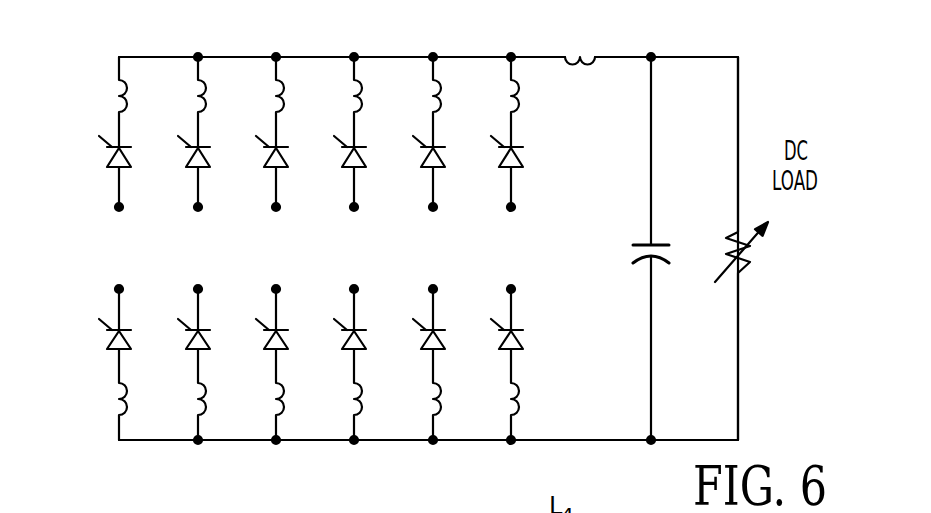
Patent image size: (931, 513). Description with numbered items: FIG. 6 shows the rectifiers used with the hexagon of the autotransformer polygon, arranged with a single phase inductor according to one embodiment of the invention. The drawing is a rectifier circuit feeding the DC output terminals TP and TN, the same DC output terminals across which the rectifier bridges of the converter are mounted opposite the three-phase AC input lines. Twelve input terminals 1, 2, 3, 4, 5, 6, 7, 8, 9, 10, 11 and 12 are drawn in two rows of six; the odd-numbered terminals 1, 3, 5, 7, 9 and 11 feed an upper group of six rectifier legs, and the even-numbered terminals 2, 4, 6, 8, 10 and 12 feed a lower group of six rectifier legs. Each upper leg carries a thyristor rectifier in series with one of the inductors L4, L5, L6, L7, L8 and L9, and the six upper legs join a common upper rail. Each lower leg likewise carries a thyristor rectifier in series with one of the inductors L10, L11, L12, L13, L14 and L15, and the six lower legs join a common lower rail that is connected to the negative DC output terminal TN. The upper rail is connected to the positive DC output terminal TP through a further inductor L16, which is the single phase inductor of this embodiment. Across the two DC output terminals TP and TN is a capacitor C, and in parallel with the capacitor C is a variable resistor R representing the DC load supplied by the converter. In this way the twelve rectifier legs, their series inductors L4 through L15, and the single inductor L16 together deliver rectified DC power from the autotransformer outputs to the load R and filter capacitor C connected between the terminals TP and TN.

The inductor L4 is at (101, 102).
The inductor L5 is at (180, 102).
The inductor L6 is at (258, 102).
The inductor L7 is at (336, 102).
The inductor L8 is at (415, 102).
The inductor L9 is at (493, 102).
The inductor L10 is at (91, 397).
The inductor L11 is at (178, 397).
The inductor L12 is at (256, 397).
The inductor L13 is at (334, 397).
The inductor L14 is at (413, 397).
The inductor L15 is at (491, 397).
The inductor L16 is at (588, 55).
The terminal 1 is at (118, 205).
The terminal 2 is at (118, 294).
The terminal 3 is at (197, 205).
The terminal 4 is at (197, 294).
The terminal 5 is at (275, 205).
The terminal 6 is at (275, 294).
The terminal 7 is at (353, 205).
The terminal 8 is at (353, 294).
The terminal 9 is at (432, 205).
The terminal 10 is at (433, 294).
The terminal 11 is at (511, 205).
The terminal 12 is at (511, 294).
The DC output terminal Tp is at (651, 56).
The DC output terminal TN is at (652, 443).
The filter capacitor C is at (634, 252).
The DC load resistor R is at (750, 257).